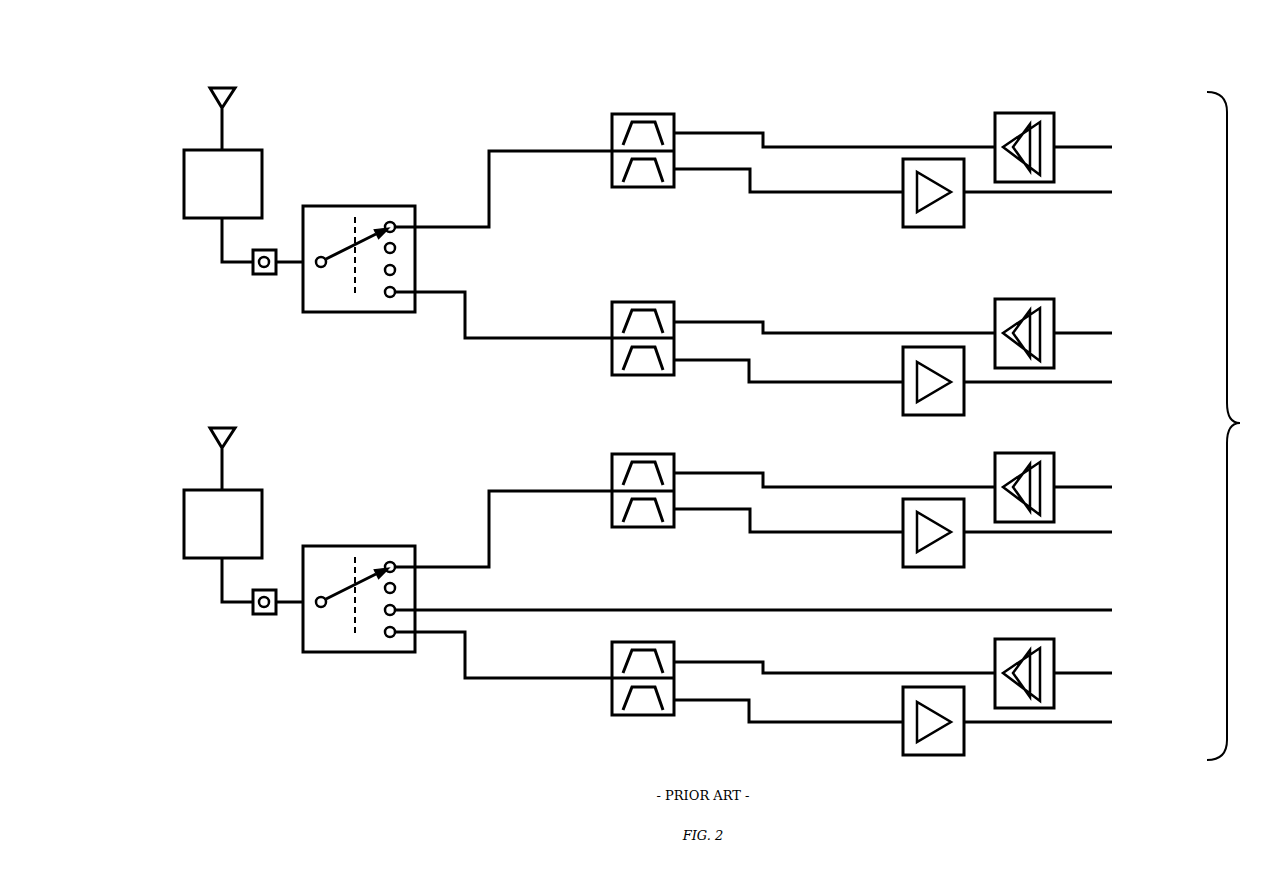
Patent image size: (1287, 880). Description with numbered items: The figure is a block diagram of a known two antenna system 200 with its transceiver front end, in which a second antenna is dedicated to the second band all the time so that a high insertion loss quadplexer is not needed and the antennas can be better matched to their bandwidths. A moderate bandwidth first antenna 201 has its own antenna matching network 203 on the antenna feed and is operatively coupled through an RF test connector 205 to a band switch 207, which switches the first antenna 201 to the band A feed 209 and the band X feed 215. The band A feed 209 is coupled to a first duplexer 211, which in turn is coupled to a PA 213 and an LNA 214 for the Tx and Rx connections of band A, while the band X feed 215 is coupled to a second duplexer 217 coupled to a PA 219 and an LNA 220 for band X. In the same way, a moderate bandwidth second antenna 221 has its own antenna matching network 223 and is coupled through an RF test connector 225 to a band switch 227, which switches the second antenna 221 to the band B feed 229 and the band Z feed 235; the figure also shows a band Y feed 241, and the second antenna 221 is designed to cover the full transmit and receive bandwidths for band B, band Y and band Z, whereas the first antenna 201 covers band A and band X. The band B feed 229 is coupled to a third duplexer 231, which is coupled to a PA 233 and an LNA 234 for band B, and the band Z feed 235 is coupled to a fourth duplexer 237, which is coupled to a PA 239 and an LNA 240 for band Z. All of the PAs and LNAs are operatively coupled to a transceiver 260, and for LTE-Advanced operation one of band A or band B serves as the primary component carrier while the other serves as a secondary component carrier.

The two antenna system 200 is at (722, 414).
The first antenna 201 is at (211, 100).
The antenna matching network 203 is at (265, 165).
The RF test connector 205 is at (266, 249).
The band switch 207 is at (368, 205).
The band A feed 209 is at (492, 190).
The first duplexer 211 is at (663, 113).
The PA 213 is at (1057, 125).
The LNA 214 is at (903, 180).
The band X feed 215 is at (468, 308).
The second duplexer 217 is at (677, 304).
The PA 219 is at (1057, 314).
The LNA 220 is at (904, 365).
The second antenna 221 is at (278, 456).
The antenna matching network 223 is at (250, 520).
The RF test connector 225 is at (252, 610).
The band switch 227 is at (363, 596).
The band B feed 229 is at (513, 520).
The third duplexer 231 is at (658, 490).
The PA 233 is at (933, 482).
The LNA 234 is at (942, 533).
The band Z feed 235 is at (513, 653).
The fourth duplexer 237 is at (664, 680).
The PA 239 is at (933, 670).
The LNA 240 is at (942, 719).
The band Y feed 241 is at (763, 600).
The transceiver 260 is at (1241, 426).